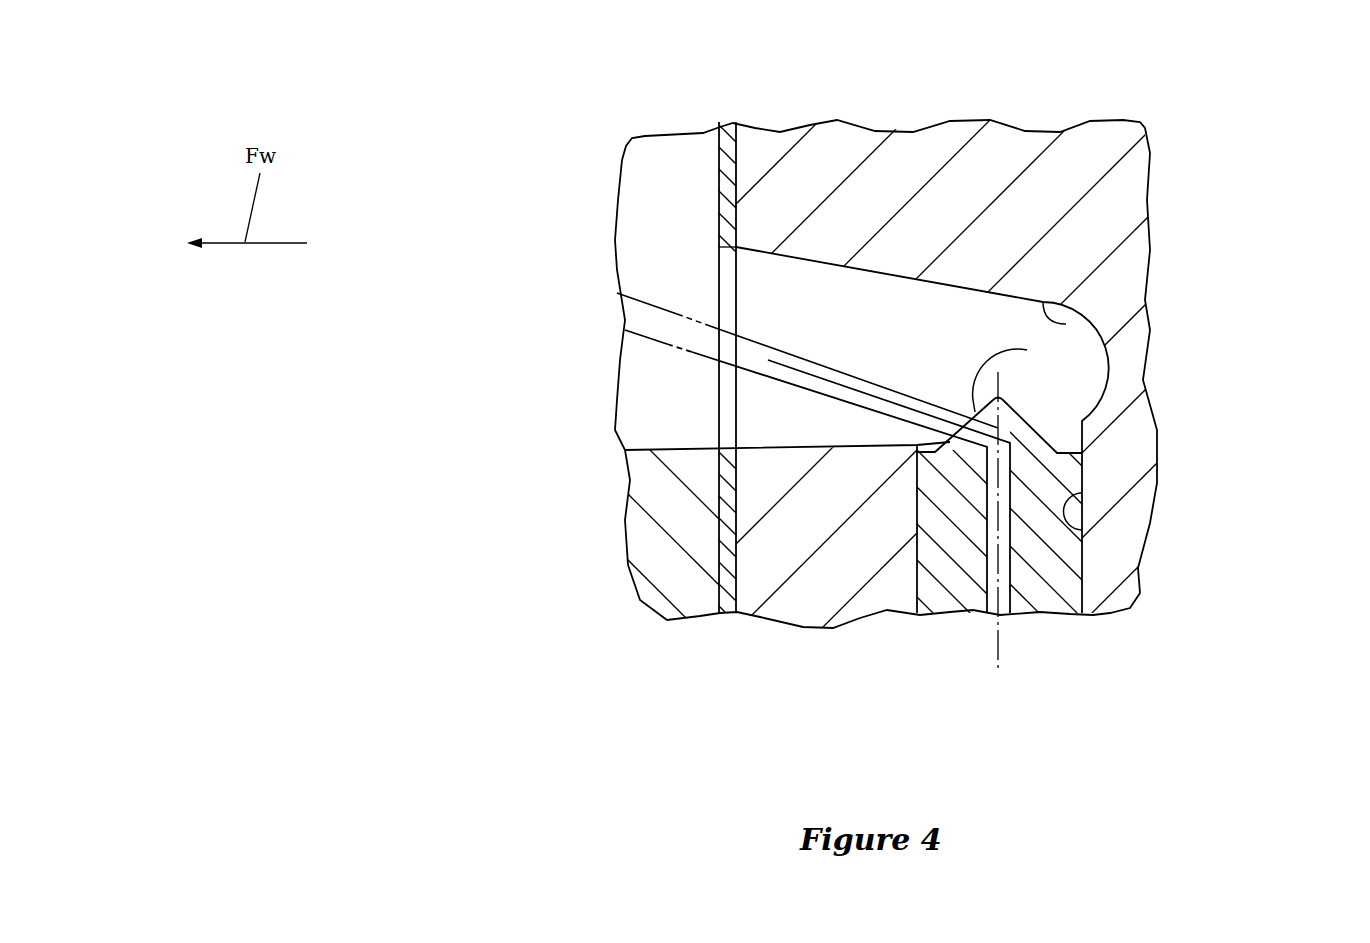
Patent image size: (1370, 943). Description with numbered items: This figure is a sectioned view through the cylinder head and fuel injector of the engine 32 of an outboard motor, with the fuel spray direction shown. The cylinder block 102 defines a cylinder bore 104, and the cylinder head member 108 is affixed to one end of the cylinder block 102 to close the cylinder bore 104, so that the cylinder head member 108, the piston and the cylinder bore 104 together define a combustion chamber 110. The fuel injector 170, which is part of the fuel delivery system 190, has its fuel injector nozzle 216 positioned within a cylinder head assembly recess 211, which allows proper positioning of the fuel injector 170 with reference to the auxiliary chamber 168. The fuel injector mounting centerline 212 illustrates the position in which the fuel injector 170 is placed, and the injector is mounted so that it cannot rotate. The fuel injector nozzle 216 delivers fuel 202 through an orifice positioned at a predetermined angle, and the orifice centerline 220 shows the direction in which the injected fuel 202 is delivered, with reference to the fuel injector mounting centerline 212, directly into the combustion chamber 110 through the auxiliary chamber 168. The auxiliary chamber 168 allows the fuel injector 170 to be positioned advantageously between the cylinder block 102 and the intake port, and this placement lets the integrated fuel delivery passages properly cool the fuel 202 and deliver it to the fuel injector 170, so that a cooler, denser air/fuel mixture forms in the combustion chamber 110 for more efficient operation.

The engine 32 is at (1240, 708).
The cylinder block 102 is at (688, 585).
The cylinder bore 104 is at (606, 372).
The cylinder head member 108 is at (1012, 152).
The combustion chamber 110 is at (660, 197).
The auxiliary chamber 168 is at (1068, 325).
The fuel injector 170 is at (1085, 577).
The fuel delivery system 190 is at (1062, 662).
The fuel 202 is at (663, 343).
The cylinder head assembly recess 211 is at (1083, 530).
The fuel injector mounting centerline 212 is at (998, 640).
The fuel injector nozzle 216 is at (1135, 390).
The orifice centerline 220 is at (838, 400).